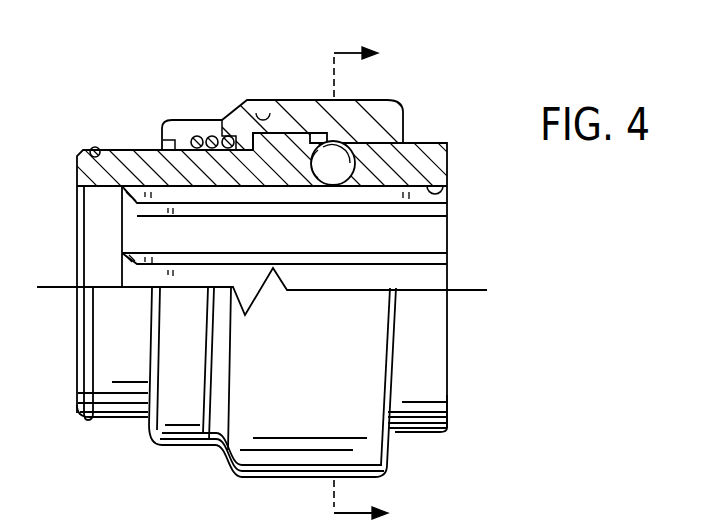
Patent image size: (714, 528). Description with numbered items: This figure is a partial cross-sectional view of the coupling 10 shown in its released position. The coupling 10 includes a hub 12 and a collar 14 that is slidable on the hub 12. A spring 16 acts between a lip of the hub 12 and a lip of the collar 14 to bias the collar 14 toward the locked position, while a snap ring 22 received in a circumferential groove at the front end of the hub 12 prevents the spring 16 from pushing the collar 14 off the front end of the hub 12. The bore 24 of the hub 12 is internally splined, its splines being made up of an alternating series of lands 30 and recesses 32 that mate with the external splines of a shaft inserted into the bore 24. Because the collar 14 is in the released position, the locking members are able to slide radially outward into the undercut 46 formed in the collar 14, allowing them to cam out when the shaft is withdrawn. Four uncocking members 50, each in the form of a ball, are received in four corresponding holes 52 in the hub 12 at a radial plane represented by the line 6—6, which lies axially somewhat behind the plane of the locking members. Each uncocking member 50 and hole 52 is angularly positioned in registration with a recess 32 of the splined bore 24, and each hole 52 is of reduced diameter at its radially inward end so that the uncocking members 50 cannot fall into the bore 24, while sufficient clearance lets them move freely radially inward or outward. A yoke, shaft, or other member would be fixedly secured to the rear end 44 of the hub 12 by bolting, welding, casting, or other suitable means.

The coupling 10 is at (423, 49).
The hub 12 is at (420, 143).
The collar 14 is at (583, 527).
The spring 16 is at (212, 137).
The snap ring 22 is at (92, 149).
The bore 24 is at (108, 228).
The lands 30 is at (143, 275).
The recesses 32 is at (435, 236).
The rear end 44 is at (448, 357).
The undercut 46 is at (250, 117).
The uncocking members 50 is at (328, 190).
The holes 52 is at (345, 141).
The line 6— 6 is at (351, 284).